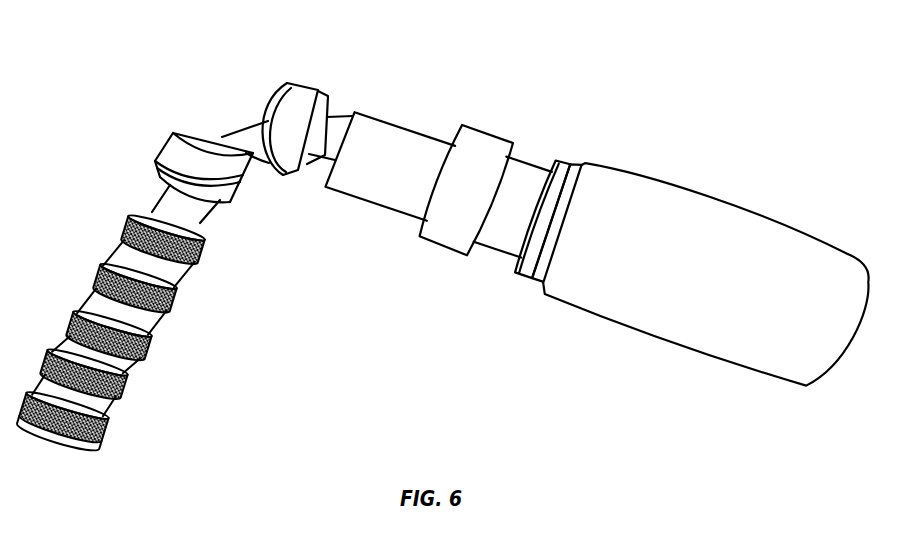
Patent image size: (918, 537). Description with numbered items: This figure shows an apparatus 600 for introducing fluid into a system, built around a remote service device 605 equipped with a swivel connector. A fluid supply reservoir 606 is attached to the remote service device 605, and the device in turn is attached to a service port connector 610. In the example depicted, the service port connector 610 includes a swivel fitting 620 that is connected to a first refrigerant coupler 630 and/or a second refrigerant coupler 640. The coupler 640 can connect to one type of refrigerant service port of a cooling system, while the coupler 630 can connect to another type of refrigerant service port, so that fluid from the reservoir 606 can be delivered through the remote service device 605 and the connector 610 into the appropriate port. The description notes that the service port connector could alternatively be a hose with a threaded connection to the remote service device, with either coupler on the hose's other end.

The apparatus 600 is at (447, 58).
The remote service device 605 is at (489, 143).
The fluid supply reservoir 606 is at (706, 208).
The service port connector 610 is at (122, 178).
The swivel fitting 620 is at (287, 95).
The R-12 coupler 630 is at (202, 258).
The R-134a coupler 640 is at (127, 383).